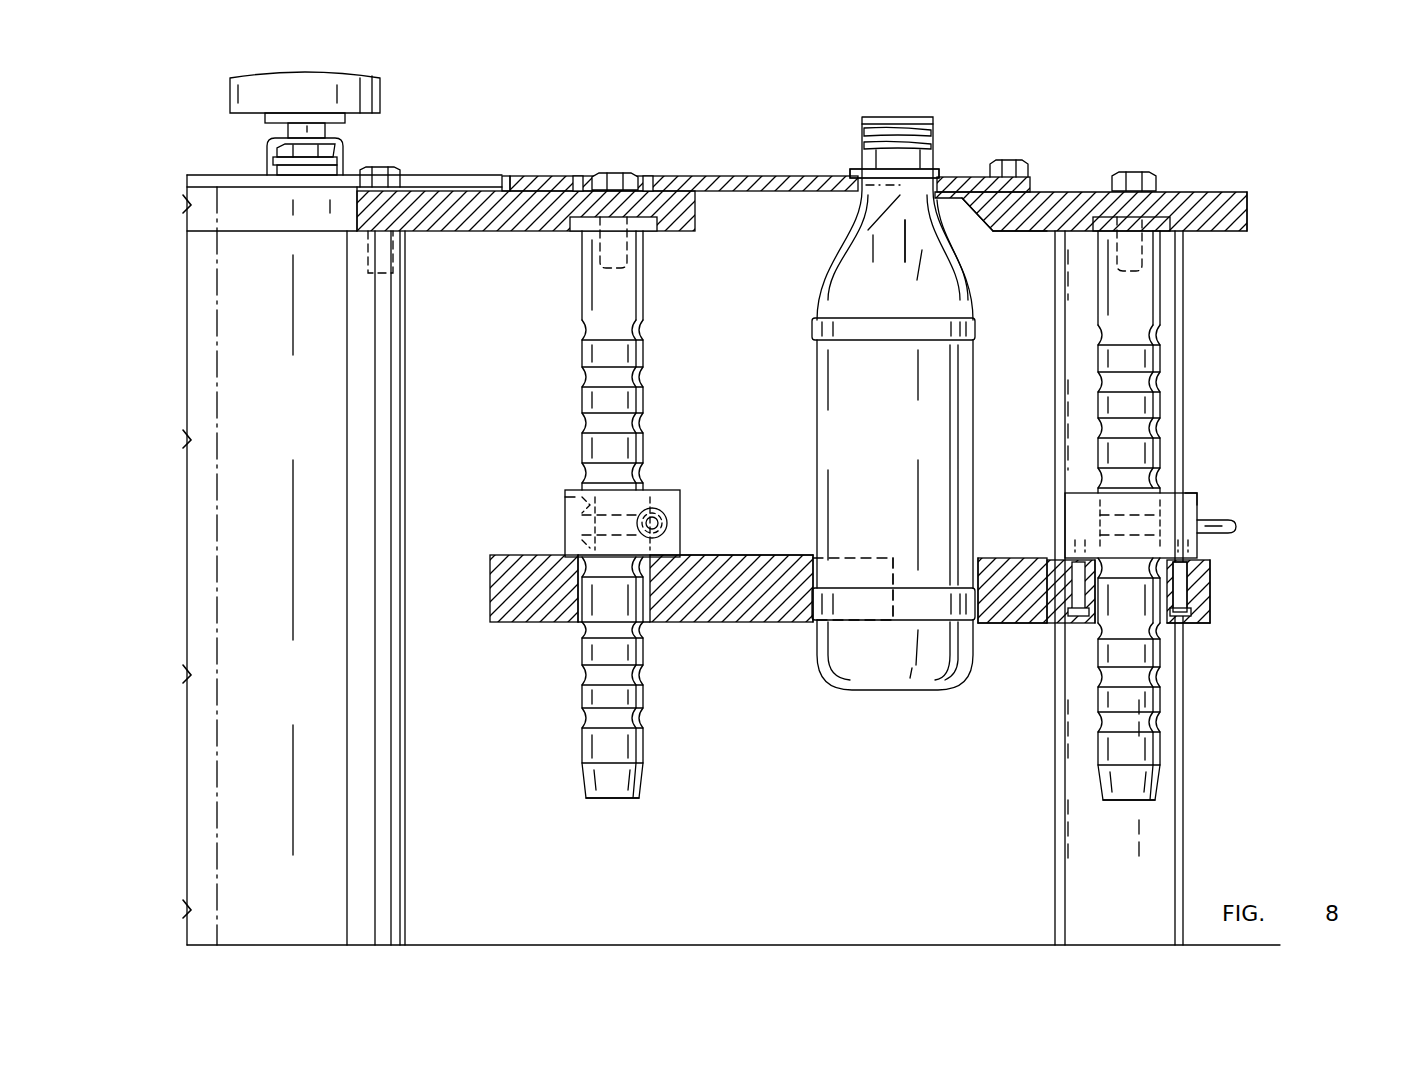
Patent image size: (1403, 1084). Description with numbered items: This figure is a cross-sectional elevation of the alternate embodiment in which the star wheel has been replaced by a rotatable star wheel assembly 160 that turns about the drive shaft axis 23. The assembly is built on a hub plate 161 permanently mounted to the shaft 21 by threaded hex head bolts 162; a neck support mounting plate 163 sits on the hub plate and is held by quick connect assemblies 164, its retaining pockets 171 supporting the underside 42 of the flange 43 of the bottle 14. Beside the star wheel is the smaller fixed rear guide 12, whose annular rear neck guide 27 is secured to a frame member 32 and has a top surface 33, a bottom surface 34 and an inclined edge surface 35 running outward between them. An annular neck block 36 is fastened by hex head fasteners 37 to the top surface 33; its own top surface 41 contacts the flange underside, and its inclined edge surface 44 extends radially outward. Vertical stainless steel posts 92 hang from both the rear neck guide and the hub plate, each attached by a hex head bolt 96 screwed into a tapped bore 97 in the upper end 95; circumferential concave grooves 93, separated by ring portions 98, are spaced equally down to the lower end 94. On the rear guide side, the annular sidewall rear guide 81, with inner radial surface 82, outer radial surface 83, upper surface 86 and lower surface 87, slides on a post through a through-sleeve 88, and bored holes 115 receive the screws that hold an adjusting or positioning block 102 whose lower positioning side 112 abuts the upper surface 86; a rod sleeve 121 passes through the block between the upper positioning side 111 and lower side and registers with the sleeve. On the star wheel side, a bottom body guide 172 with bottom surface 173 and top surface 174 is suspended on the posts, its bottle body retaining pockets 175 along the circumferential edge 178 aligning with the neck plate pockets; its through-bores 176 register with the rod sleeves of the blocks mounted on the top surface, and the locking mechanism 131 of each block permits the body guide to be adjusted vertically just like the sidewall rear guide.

The fixed rear guide 12 is at (1282, 190).
The bottle 14 is at (815, 388).
The shaft 21 is at (373, 408).
The drive shaft axis 23 is at (220, 370).
The annular rear neck guide 27 is at (1217, 190).
The frame member 32 is at (1185, 296).
The top surface 33 is at (1076, 192).
The bottom surface 34 is at (1046, 233).
The inclined edge surface 35 is at (963, 196).
The annular neck block 36 is at (977, 180).
The hex head fasteners 37 is at (1012, 176).
The top surface 41 is at (950, 176).
The underside 42 is at (904, 180).
The flange 43 is at (852, 168).
The inclined edge surface 44 is at (905, 190).
The annular sidewall rear guide 81 is at (1215, 617).
The inner radial surface 82 is at (970, 598).
The outer radial surface 83 is at (1212, 575).
The upper surface 86 is at (1035, 557).
The lower surface 87 is at (1030, 624).
The through-sleeve 88 is at (1093, 592).
The vertical stainless steel post 92 is at (578, 357).
The circumferential concave grooves 93 is at (641, 378).
The lower end 94 is at (612, 800).
The upper end 95 is at (622, 228).
The hex head bolt 96 is at (597, 172).
The tapped bore 97 is at (625, 245).
The ring portion 98 is at (580, 437).
The adjusting or positioning block 102 is at (668, 492).
The upper positioning side 111 is at (1197, 495).
The lower positioning side 112 is at (1190, 574).
The bored holes 115 is at (1212, 590).
The rod sleeve 121 is at (565, 497).
The locking mechanism 131 is at (664, 521).
The rotatable star wheel assembly 160 is at (540, 162).
The hub plate 161 is at (496, 232).
The threaded hex head bolts 162 is at (381, 168).
The neck support mounting plate 163 is at (700, 176).
The quick connect assemblies 164 is at (386, 82).
The retaining pockets 171 is at (884, 215).
The bottom body guide 172 is at (722, 624).
The bottom surface 173 is at (791, 624).
The top surface 174 is at (742, 556).
The bottle body retaining pockets 175 is at (812, 588).
The through-bores 176 is at (622, 600).
The circumferential edge 178 is at (903, 566).